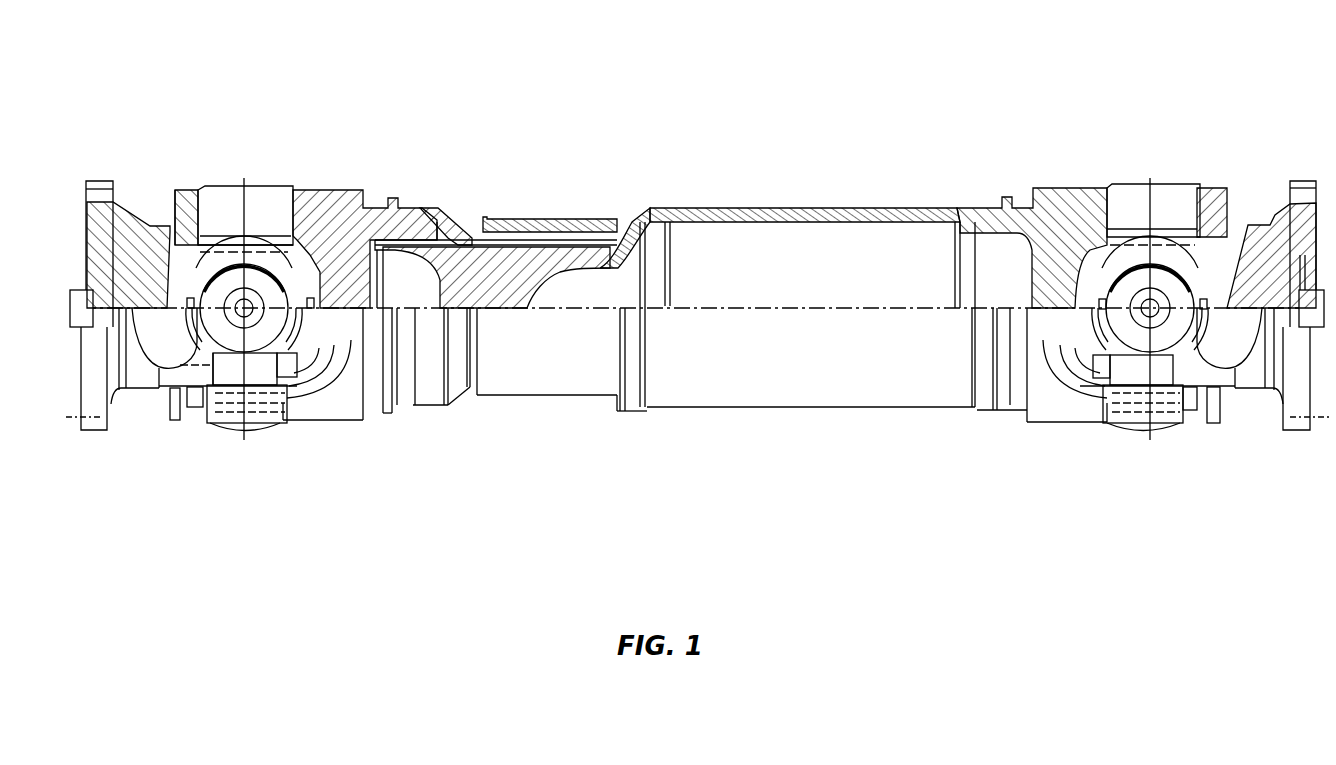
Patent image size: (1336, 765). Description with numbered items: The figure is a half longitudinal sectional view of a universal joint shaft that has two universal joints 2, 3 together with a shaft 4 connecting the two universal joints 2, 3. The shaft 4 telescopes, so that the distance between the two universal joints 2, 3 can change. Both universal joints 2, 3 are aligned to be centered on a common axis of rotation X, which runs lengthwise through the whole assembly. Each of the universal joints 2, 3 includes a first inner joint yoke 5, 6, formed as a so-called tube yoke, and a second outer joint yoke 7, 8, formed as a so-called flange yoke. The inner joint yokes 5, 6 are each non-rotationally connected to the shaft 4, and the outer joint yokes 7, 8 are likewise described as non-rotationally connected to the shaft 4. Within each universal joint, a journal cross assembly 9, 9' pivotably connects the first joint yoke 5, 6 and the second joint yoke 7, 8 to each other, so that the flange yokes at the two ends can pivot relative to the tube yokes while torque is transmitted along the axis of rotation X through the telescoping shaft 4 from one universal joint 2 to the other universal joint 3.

The universal joint 2 is at (245, 172).
The universal joint 3 is at (1153, 172).
The shaft 4 is at (702, 213).
The first inner joint yoke 5 is at (333, 223).
The first inner joint yoke 6 is at (1067, 225).
The second outer joint yoke 7 is at (127, 257).
The second outer joint yoke 8 is at (1263, 248).
The journal cross assembly 9 is at (260, 240).
The journal cross assembly 9' is at (1144, 240).
The axis of rotation x is at (807, 306).